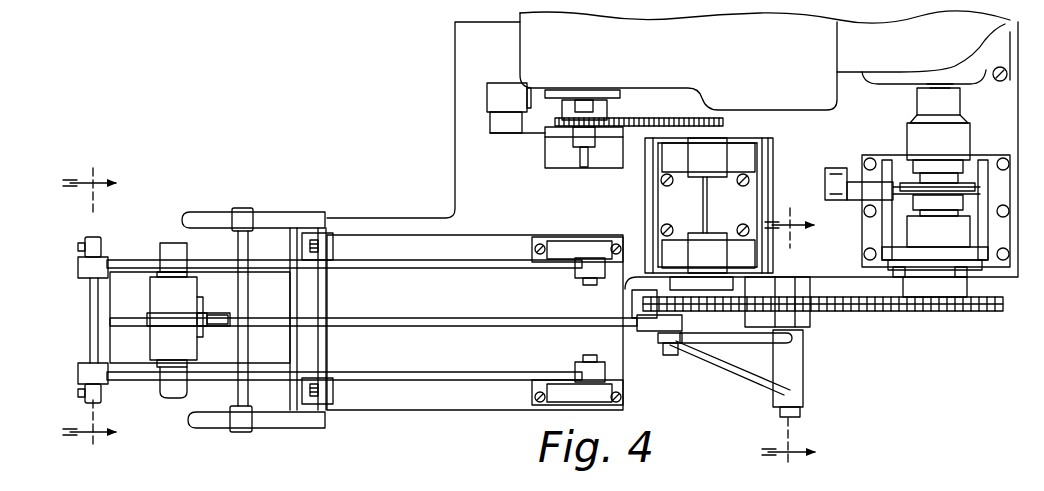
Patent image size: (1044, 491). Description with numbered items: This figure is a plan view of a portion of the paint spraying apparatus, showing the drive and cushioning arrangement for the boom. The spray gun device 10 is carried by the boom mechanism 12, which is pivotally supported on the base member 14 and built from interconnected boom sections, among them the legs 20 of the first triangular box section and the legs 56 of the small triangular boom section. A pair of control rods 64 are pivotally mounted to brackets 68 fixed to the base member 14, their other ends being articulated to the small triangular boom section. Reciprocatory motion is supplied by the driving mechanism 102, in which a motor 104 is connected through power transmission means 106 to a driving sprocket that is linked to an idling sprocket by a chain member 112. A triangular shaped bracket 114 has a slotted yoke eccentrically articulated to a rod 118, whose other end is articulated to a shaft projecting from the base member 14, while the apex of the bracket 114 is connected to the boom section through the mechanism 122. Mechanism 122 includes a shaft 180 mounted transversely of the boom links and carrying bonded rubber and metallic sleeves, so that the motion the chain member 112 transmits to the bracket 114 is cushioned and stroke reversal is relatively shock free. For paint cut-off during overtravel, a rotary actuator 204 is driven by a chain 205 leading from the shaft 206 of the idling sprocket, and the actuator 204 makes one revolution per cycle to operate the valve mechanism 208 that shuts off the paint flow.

The spray gun device 10 is at (110, 307).
The boom mechanism 12 is at (810, 337).
The base member 14 is at (452, 176).
The legs 20 is at (205, 221).
The legs 56 is at (80, 245).
The control rods 64 is at (392, 263).
The brackets 68 is at (566, 247).
The driving mechanism 102 is at (815, 110).
The motor 104 is at (532, 53).
The power transmission means 106 is at (958, 140).
The chain member 112 is at (838, 308).
The triangular shaped bracket 114 is at (400, 323).
The rod 118 is at (745, 380).
The mechanism 122 is at (153, 295).
The shaft 180 is at (175, 250).
The rotary actuator 204 is at (618, 94).
The chain 205 is at (676, 120).
The shaft 206 is at (705, 212).
The valve mechanism 208 is at (508, 121).